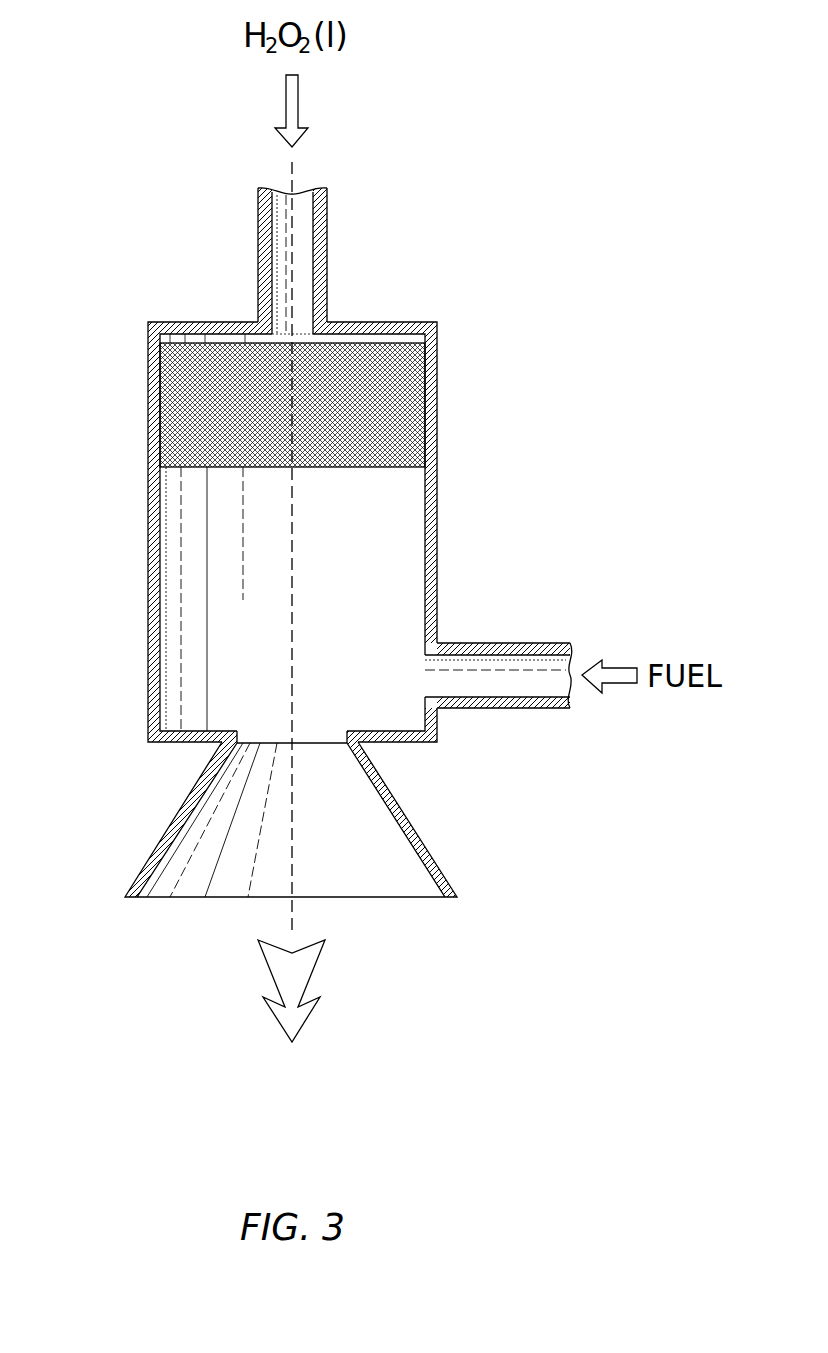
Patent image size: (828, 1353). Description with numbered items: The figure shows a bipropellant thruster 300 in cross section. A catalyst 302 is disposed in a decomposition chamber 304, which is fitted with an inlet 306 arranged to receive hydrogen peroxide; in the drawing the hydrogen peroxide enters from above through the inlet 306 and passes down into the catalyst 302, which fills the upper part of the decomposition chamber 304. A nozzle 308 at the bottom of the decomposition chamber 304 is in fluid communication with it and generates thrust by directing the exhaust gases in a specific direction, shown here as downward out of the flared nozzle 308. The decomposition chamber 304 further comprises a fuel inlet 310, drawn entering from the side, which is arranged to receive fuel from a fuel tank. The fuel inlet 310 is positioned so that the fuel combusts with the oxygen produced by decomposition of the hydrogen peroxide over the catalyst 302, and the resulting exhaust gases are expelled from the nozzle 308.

The bipropellant thruster 300 is at (562, 447).
The catalyst 302 is at (330, 467).
The decomposition chamber 304 is at (148, 530).
The inlet 306 is at (258, 287).
The nozzle 308 is at (163, 838).
The fuel inlet 310 is at (472, 643).